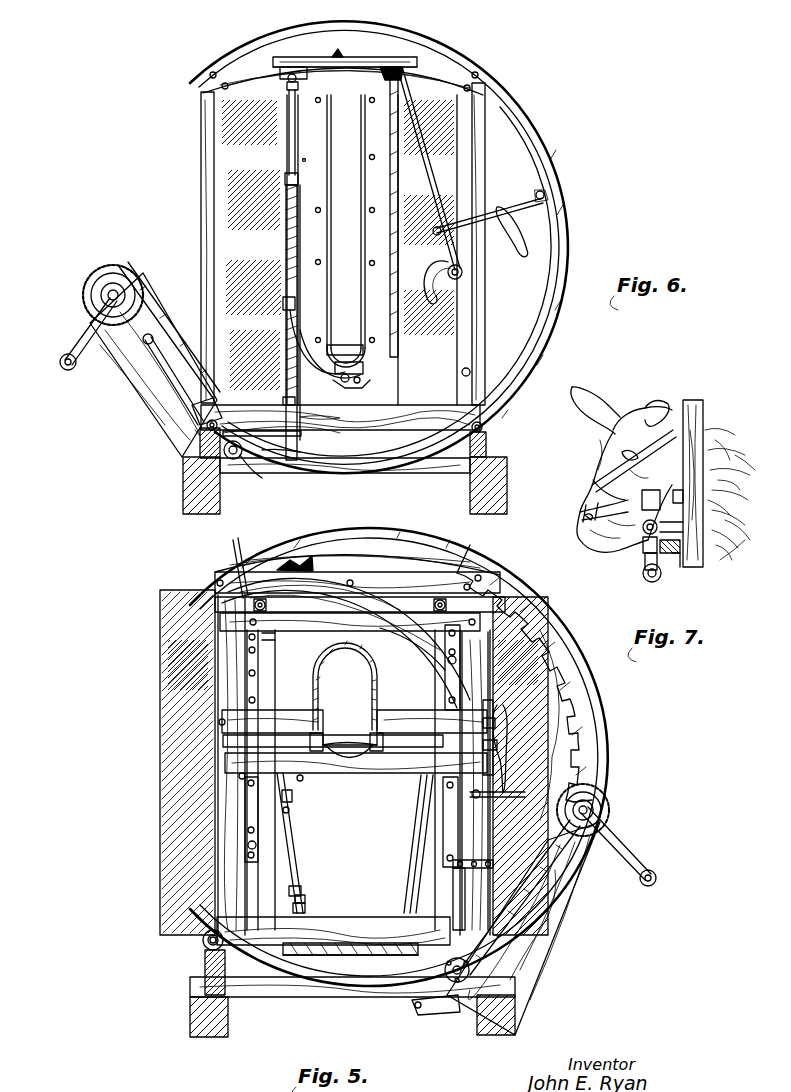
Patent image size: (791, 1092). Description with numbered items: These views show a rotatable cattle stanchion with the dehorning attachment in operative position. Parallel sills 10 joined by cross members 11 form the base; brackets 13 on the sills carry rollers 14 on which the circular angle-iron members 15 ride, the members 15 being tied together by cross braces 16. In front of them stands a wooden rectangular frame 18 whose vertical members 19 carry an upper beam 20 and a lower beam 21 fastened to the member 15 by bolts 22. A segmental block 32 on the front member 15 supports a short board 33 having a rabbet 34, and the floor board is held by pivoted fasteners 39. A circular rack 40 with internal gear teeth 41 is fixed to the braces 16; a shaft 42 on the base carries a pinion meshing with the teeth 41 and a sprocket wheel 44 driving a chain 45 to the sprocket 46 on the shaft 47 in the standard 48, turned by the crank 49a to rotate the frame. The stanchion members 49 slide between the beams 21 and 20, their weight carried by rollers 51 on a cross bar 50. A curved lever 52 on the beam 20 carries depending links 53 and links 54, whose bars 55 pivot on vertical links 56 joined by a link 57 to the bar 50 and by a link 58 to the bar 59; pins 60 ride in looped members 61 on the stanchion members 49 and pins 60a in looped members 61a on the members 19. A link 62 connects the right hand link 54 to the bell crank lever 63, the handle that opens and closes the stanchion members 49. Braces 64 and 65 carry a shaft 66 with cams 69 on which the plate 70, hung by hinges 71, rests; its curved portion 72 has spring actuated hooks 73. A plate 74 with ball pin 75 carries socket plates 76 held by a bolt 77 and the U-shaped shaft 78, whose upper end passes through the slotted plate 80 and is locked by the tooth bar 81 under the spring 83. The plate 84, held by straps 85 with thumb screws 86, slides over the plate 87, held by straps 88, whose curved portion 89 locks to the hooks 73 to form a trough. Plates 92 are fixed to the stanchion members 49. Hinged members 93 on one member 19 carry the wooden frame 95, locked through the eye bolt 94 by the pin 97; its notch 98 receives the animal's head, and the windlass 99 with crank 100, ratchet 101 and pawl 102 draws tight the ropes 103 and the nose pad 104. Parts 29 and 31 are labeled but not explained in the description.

In FIG. 6, the sills 10 is at (212, 500).
In FIG. 5, the sills 10 is at (206, 1035).
In FIG. 6, the cross members 11 is at (288, 473).
In FIG. 5, the cross members 11 is at (305, 998).
In FIG. 6, the brackets 13 is at (203, 445).
In FIG. 5, the brackets 13 is at (226, 970).
In FIG. 6, the roller 14 is at (206, 430).
In FIG. 5, the roller 14 is at (206, 945).
In FIG. 6, the circular members 15 is at (566, 238).
In FIG. 5, the circular members 15 is at (375, 538).
In FIG. 6, the cross braces 16 is at (538, 192).
In FIG. 6, the rectangular frame 18 is at (484, 90).
In FIG. 5, the rectangular frame 18 is at (245, 560).
In FIG. 6, the members 19 is at (201, 160).
In FIG. 7, the members 19 is at (704, 420).
In FIG. 5, the members 19 is at (490, 685).
In FIG. 6, the beam 20 is at (358, 422).
In FIG. 5, the beam 20 is at (420, 560).
In FIG. 6, the beam 21 is at (450, 70).
In FIG. 5, the beam 21 is at (365, 930).
In FIG. 6, the bolts 22 is at (211, 72).
In FIG. 5, the bolts 22 is at (217, 578).
In FIG. 6, the lower bracket 29 is at (198, 412).
In FIG. 6, the slotted link 31 is at (185, 385).
In FIG. 6, the segmental block 32 is at (375, 57).
In FIG. 5, the segmental block 32 is at (350, 958).
In FIG. 6, the short board 33 is at (420, 60).
In FIG. 5, the short board 33 is at (390, 960).
In FIG. 6, the rabbet 34 is at (352, 67).
In FIG. 6, the pivoted fasteners 39 is at (340, 49).
In FIG. 5, the circular rack 40 is at (603, 688).
In FIG. 5, the internal gear teeth 41 is at (565, 740).
In FIG. 6, the shaft 42 is at (235, 460).
In FIG. 5, the shaft 42 is at (457, 982).
In FIG. 6, the sprocket wheel 44 is at (262, 480).
In FIG. 6, the chain 45 is at (125, 320).
In FIG. 5, the chain 45 is at (520, 800).
In FIG. 6, the sprocket 46 is at (132, 285).
In FIG. 5, the sprocket 46 is at (602, 808).
In FIG. 6, the shaft 47 is at (95, 332).
In FIG. 5, the shaft 47 is at (606, 826).
In FIG. 6, the standard 48 is at (145, 395).
In FIG. 5, the standard 48 is at (575, 900).
In FIG. 5, the vertical stanchion members 49 is at (278, 672).
In FIG. 6, the crank 49a is at (60, 364).
In FIG. 5, the crank 49a is at (656, 880).
In FIG. 6, the cross bar 50 is at (340, 345).
In FIG. 5, the cross bar 50 is at (278, 648).
In FIG. 5, the rollers 51 is at (268, 606).
In FIG. 5, the curved lever 52 is at (350, 580).
In FIG. 5, the pivoted depending link 53 is at (180, 602).
In FIG. 5, the link 54 is at (225, 665).
In FIG. 5, the inwardly extending bars 55 is at (462, 645).
In FIG. 5, the vertically arranged link 56 is at (262, 700).
In FIG. 5, the link 57 is at (262, 645).
In FIG. 5, the link 58 is at (426, 840).
In FIG. 5, the bar 59 is at (455, 880).
In FIG. 5, the pins 60 is at (470, 625).
In FIG. 5, the pins 60a is at (446, 672).
In FIG. 5, the looped members 61 is at (458, 662).
In FIG. 5, the looped members 61a is at (245, 820).
In FIG. 5, the pivoted link 62 is at (320, 750).
In FIG. 6, the bell crank lever 63 is at (520, 250).
In FIG. 5, the bell crank lever 63 is at (506, 718).
In FIG. 6, the brace 64 is at (425, 192).
In FIG. 6, the brace 65 is at (505, 212).
In FIG. 6, the shaft 66 is at (462, 278).
In FIG. 6, the eccentrically arranged cam 69 is at (426, 275).
In FIG. 6, the plate 70 is at (390, 235).
In FIG. 5, the plate 70 is at (412, 880).
In FIG. 6, the hinges 71 is at (368, 95).
In FIG. 6, the curved portion 72 is at (360, 365).
In FIG. 5, the curved portion 72 is at (420, 650).
In FIG. 6, the spring actuated hooks 73 is at (372, 386).
In FIG. 6, the plate 74 is at (284, 80).
In FIG. 6, the pin 75 is at (296, 82).
In FIG. 6, the socket plates 76 is at (289, 110).
In FIG. 5, the socket plates 76 is at (304, 905).
In FIG. 6, the bolt 77 is at (288, 88).
In FIG. 5, the bolt 77 is at (308, 918).
In FIG. 6, the shaft 78 is at (306, 162).
In FIG. 5, the shaft 78 is at (290, 812).
In FIG. 6, the slotted plate 80 is at (270, 428).
In FIG. 5, the slotted plate 80 is at (337, 585).
In FIG. 6, the tooth bar 81 is at (300, 434).
In FIG. 5, the tooth bar 81 is at (313, 565).
In FIG. 6, the spring 83 is at (290, 456).
In FIG. 6, the plate 84 is at (286, 228).
In FIG. 5, the plate 84 is at (300, 893).
In FIG. 6, the straps 85 is at (298, 178).
In FIG. 5, the straps 85 is at (290, 796).
In FIG. 6, the thumb screws 86 is at (283, 300).
In FIG. 5, the thumb screws 86 is at (218, 724).
In FIG. 6, the plate 87 is at (300, 262).
In FIG. 5, the plate 87 is at (304, 780).
In FIG. 6, the straps 88 is at (292, 312).
In FIG. 5, the straps 88 is at (293, 798).
In FIG. 6, the curved portion 89 is at (328, 355).
In FIG. 5, the curved portion 89 is at (300, 660).
In FIG. 6, the plate 92 is at (339, 250).
In FIG. 5, the plate 92 is at (353, 697).
In FIG. 7, the hinged members 93 is at (683, 496).
In FIG. 5, the hinged members 93 is at (527, 768).
In FIG. 5, the eye bolt 94 is at (225, 760).
In FIG. 7, the frame 95 is at (690, 570).
In FIG. 5, the frame 95 is at (368, 748).
In FIG. 5, the pin 97 is at (222, 718).
In FIG. 5, the notch 98 is at (348, 740).
In FIG. 7, the windlass 99 is at (643, 535).
In FIG. 5, the windlass 99 is at (378, 752).
In FIG. 7, the crank 100 is at (648, 580).
In FIG. 5, the crank 100 is at (575, 790).
In FIG. 7, the ratchet 101 is at (672, 530).
In FIG. 5, the ratchet 101 is at (498, 745).
In FIG. 7, the pawl 102 is at (660, 492).
In FIG. 5, the pawl 102 is at (496, 724).
In FIG. 7, the ropes 103 is at (600, 476).
In FIG. 5, the ropes 103 is at (345, 685).
In FIG. 7, the pad 104 is at (584, 508).